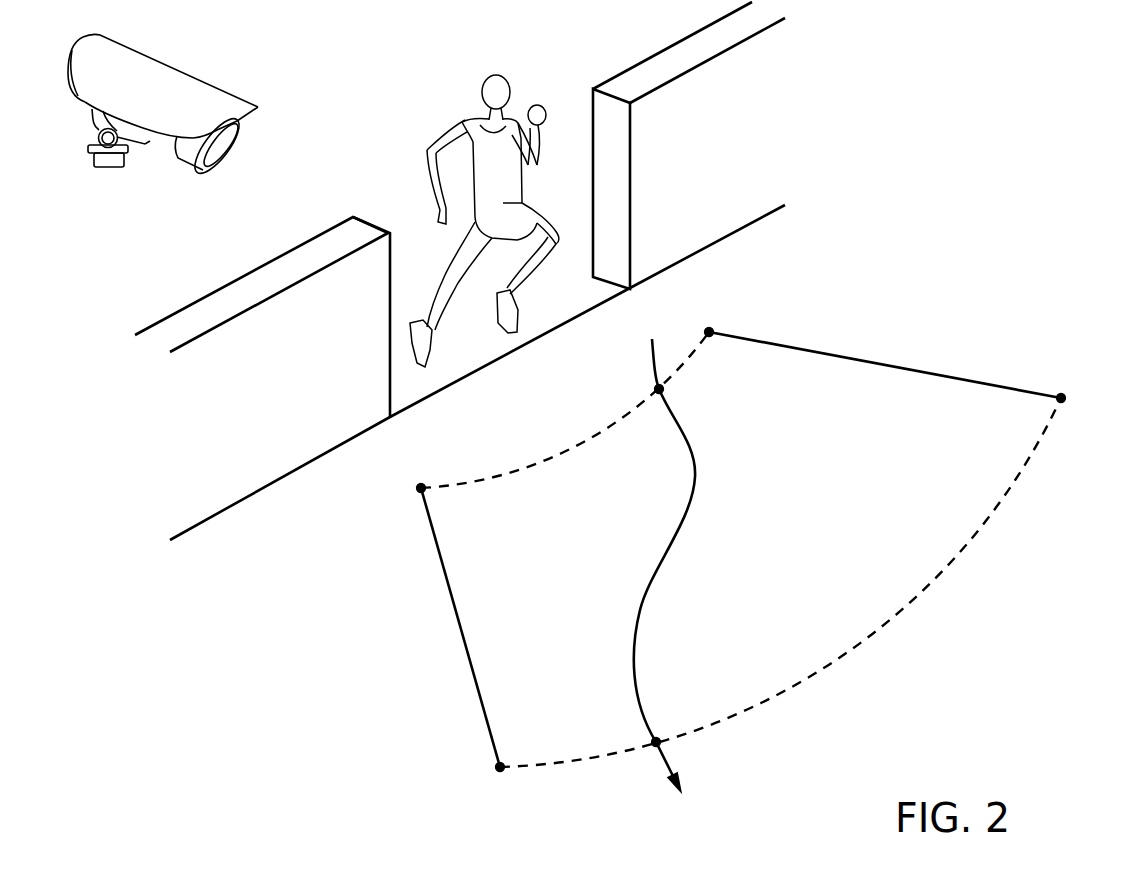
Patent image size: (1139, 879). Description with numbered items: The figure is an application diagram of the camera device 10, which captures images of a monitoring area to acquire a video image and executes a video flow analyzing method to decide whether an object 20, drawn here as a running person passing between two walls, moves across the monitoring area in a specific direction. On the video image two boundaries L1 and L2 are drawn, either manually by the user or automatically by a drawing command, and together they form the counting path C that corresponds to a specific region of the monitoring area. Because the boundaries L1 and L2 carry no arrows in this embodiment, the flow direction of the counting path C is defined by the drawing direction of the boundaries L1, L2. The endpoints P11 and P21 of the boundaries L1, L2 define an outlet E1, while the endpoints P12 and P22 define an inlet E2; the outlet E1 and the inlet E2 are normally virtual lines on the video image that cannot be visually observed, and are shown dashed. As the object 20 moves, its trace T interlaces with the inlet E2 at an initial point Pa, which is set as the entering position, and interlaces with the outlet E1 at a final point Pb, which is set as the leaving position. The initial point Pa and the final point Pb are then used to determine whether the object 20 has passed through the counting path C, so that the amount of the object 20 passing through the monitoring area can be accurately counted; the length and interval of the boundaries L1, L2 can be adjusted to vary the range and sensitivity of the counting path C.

The camera device 10 is at (142, 62).
The object 20 is at (490, 75).
The boundary L1 is at (927, 296).
The boundary L2 is at (465, 645).
The outlet E1 is at (933, 685).
The inlet E2 is at (565, 410).
The counting path C is at (710, 520).
The trace T is at (664, 579).
The endpoint P11 is at (1074, 385).
The endpoint P12 is at (712, 320).
The endpoint P21 is at (489, 783).
The endpoint P22 is at (398, 490).
The initial point Pa is at (642, 382).
The final point Pb is at (676, 751).